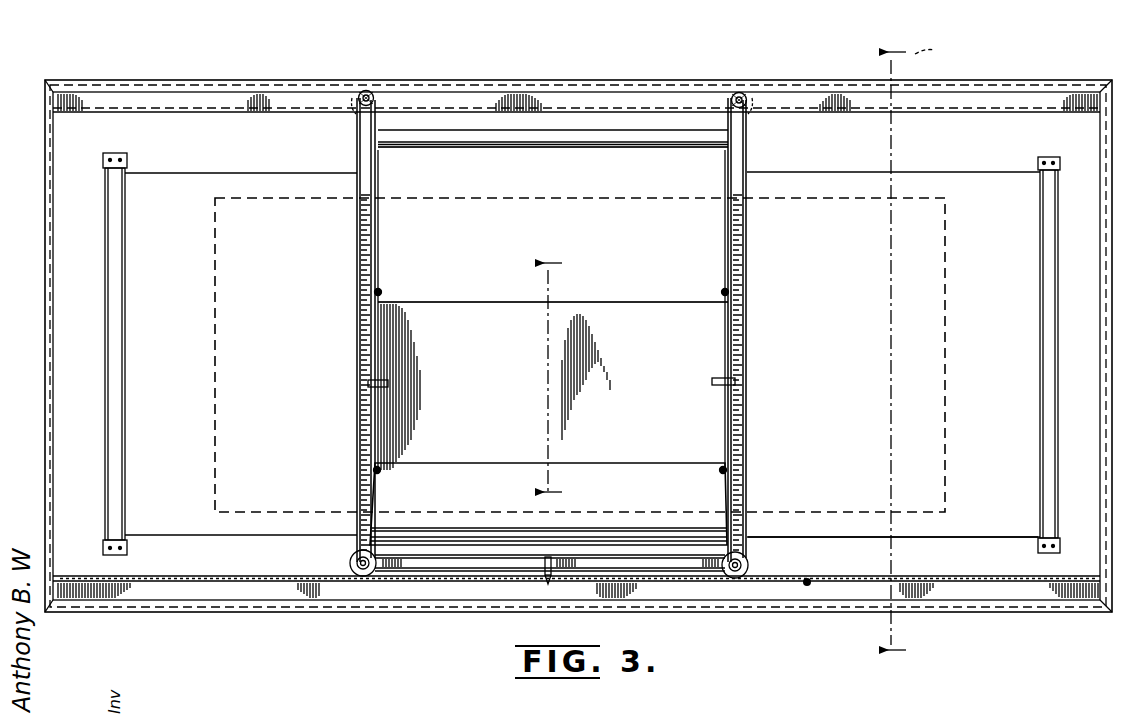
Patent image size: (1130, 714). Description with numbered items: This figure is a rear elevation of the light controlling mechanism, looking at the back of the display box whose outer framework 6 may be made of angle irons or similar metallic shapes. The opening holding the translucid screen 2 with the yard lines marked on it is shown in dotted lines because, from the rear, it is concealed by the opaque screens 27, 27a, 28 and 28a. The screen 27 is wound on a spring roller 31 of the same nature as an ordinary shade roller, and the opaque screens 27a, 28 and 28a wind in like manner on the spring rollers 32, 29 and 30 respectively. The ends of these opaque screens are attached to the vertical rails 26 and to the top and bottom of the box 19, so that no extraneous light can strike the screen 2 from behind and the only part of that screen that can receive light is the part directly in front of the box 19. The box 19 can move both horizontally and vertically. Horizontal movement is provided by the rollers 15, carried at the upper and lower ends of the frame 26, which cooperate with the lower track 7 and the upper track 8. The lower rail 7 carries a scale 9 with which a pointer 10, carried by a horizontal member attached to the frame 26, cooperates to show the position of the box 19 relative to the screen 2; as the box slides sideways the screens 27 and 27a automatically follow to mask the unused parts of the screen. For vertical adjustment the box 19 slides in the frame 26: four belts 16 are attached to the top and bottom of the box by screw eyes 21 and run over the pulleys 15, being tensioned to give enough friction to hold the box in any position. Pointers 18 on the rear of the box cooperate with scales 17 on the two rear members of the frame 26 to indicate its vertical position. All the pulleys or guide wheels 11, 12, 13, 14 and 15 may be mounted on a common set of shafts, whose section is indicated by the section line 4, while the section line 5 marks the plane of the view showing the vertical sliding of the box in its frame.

The translucid screen 2 is at (922, 510).
The section line 4- 4 is at (906, 355).
The section line 5- 5 is at (549, 380).
The outer framework 6 is at (48, 190).
The lower track 7 is at (162, 586).
The upper track 8 is at (222, 105).
The scale 9 is at (262, 582).
The pointer 10 is at (546, 584).
The pulley 11 is at (362, 577).
The pulley 12 is at (745, 579).
The pulley 13 is at (368, 90).
The pulley 14 is at (741, 92).
The rollers 15 is at (354, 108).
The belts 16 is at (382, 241).
The scales 17 is at (362, 243).
The pointers 18 is at (388, 382).
The box 19 is at (475, 308).
The screw eyes 21 is at (384, 292).
The vertical rails 26 is at (358, 160).
The opaque screen 27 is at (960, 187).
The opaque screen 27a is at (244, 183).
The opaque screen 28 is at (455, 155).
The opaque screen 28a is at (625, 480).
The spring roller 29 is at (585, 135).
The spring roller 30 is at (486, 536).
The spring roller 31 is at (1050, 274).
The spring roller 32 is at (112, 290).